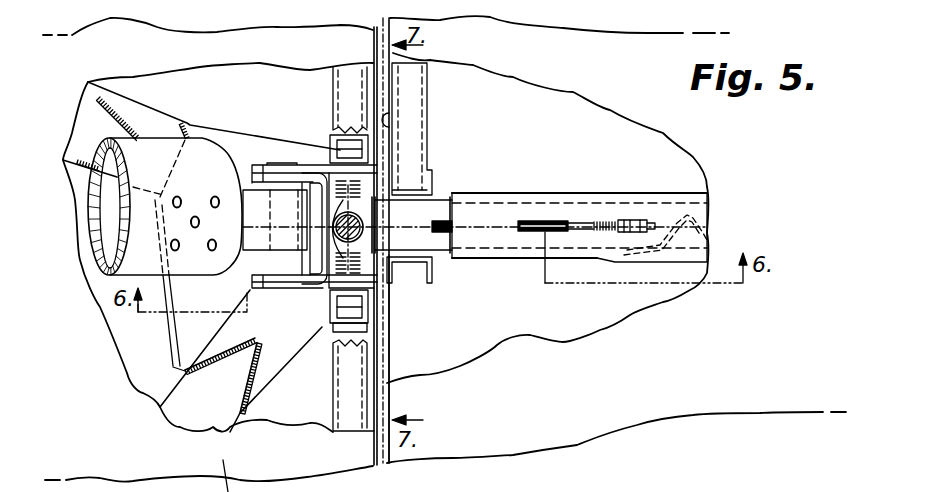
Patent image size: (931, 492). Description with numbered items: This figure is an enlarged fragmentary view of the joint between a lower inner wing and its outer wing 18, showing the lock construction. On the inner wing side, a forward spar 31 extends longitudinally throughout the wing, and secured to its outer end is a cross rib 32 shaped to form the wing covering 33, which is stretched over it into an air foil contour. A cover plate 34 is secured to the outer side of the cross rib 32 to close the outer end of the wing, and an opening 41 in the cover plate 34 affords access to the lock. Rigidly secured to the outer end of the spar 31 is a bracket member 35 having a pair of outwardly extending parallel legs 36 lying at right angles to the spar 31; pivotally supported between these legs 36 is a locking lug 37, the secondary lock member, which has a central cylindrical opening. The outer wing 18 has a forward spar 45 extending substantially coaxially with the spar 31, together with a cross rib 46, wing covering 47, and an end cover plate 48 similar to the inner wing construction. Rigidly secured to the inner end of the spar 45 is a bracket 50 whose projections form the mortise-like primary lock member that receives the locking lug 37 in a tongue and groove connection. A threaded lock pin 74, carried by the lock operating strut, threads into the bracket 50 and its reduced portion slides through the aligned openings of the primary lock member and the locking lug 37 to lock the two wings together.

The outer wing 18 is at (677, 405).
The forward spar 31 is at (127, 113).
The cross rib 32 is at (340, 400).
The wing covering 33 is at (130, 400).
The cover plate 34 is at (373, 393).
The bracket member 35 is at (310, 163).
The leg 36 is at (333, 148).
The locking lug 37 is at (382, 182).
The opening 41 is at (391, 292).
The forward spar 45 is at (672, 208).
The cross rib 46 is at (420, 147).
The wing covering 47 is at (602, 90).
The end cover plate 48 is at (383, 117).
The bracket 50 is at (417, 217).
The threaded lock pin 74 is at (367, 223).